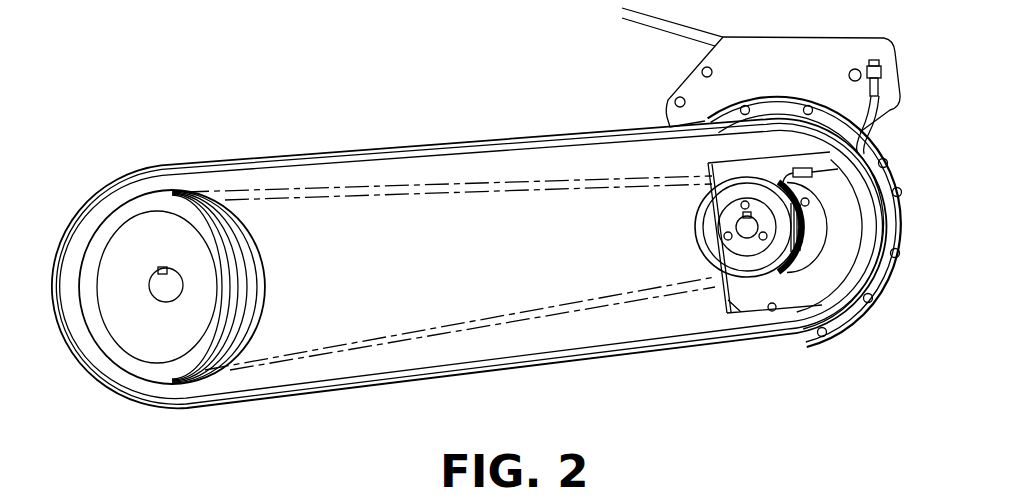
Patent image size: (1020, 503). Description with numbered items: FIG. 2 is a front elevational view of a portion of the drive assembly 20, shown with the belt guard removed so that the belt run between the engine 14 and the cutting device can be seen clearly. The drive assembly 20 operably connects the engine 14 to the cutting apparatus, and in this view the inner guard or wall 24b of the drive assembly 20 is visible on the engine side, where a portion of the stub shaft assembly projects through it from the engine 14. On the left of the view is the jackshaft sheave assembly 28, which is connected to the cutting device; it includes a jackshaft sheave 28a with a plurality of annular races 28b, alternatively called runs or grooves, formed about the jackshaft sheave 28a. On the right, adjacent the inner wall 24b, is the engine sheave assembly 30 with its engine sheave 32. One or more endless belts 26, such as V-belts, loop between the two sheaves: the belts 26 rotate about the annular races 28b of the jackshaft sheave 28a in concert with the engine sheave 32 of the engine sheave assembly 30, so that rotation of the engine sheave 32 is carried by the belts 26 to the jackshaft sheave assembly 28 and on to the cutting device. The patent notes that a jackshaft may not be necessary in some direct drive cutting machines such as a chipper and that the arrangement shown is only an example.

The engine 14 is at (818, 72).
The drive assembly 20 is at (398, 84).
The inner guard or wall 24b is at (524, 281).
The endless belts 26 is at (356, 198).
The jackshaft sheave assembly 28 is at (221, 287).
The jackshaft sheave 28a is at (174, 349).
The annular races 28b is at (246, 262).
The engine sheave assembly 30 is at (684, 228).
The engine sheave 32 is at (739, 276).